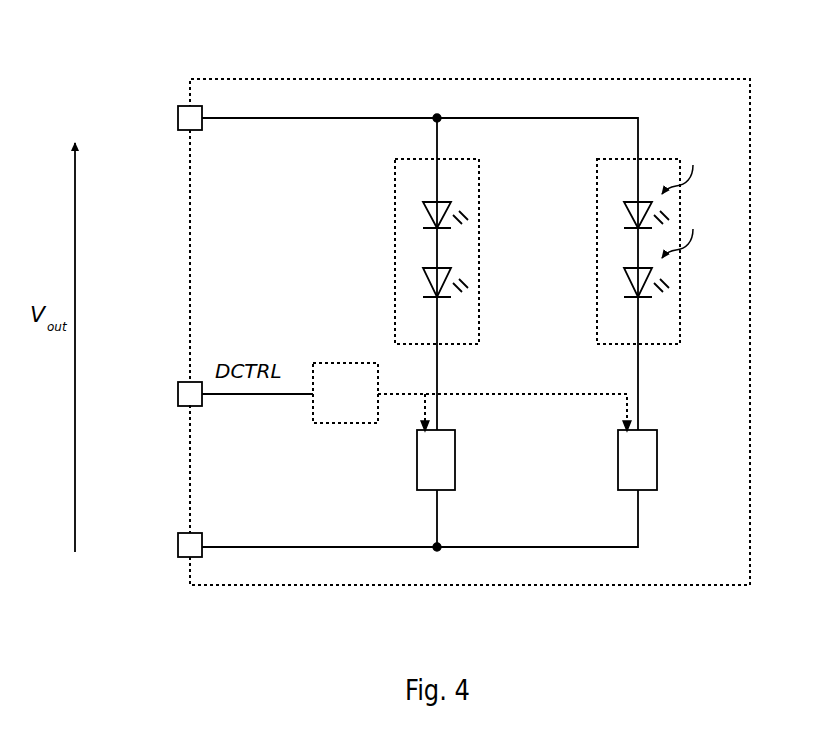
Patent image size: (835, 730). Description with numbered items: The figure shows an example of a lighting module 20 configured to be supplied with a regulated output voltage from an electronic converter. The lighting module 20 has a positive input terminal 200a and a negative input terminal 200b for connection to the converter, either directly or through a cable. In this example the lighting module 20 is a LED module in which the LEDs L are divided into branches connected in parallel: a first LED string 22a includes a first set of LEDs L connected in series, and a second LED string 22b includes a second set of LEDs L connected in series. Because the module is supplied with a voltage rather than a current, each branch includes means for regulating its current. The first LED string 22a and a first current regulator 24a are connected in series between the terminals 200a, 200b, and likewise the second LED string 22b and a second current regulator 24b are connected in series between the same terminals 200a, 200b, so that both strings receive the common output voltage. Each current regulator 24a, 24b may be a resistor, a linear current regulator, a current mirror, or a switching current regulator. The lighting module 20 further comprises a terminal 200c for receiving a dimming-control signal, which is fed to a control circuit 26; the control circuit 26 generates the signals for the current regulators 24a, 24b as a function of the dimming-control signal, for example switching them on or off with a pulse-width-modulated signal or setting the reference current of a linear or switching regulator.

The lighting module 20 is at (623, 80).
The positive input terminal 200a is at (183, 103).
The negative input terminal 200b is at (183, 560).
The further terminal 200c is at (180, 380).
The first LED string 22a is at (422, 194).
The second LED string 22b is at (653, 349).
The LED L is at (461, 194).
The first current regulator 24a is at (440, 483).
The second current regulator 24b is at (643, 483).
The control circuit 26 is at (350, 360).